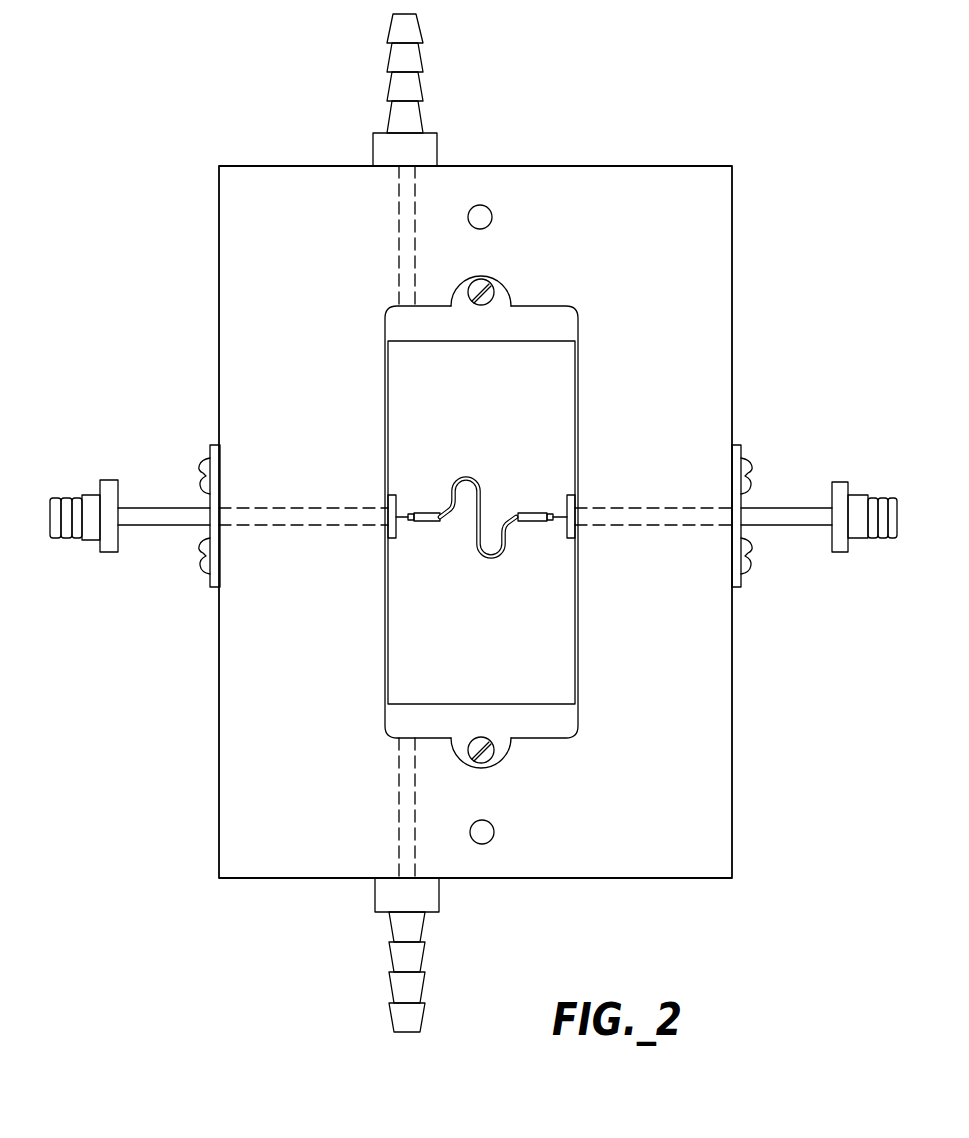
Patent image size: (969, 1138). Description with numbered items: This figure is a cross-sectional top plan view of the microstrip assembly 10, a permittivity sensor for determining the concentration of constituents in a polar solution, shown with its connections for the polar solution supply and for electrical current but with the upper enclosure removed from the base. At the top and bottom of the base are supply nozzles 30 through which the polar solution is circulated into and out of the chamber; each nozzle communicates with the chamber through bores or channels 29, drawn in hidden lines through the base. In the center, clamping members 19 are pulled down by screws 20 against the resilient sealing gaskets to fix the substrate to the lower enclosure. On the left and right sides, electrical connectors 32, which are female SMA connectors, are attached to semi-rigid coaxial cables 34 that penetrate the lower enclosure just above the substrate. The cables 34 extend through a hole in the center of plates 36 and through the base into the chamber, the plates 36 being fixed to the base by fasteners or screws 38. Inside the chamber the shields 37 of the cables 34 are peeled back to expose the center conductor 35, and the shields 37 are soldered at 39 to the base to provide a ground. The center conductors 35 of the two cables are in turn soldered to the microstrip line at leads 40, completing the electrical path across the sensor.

The microstrip assembly 10 is at (260, 917).
The clamping members 19 is at (557, 317).
The screws 20 is at (495, 295).
The bores or channels 29 is at (401, 240).
The supply nozzles 30 is at (423, 90).
The electrical connectors 32 is at (73, 495).
The semi-rigid coaxial cables 34 is at (136, 500).
The center conductor 35 is at (400, 522).
The plates 36 is at (210, 440).
The shields 37 is at (275, 508).
The fasteners or screws 38 is at (203, 567).
The solder points 39 is at (394, 496).
The leads 40 is at (412, 521).